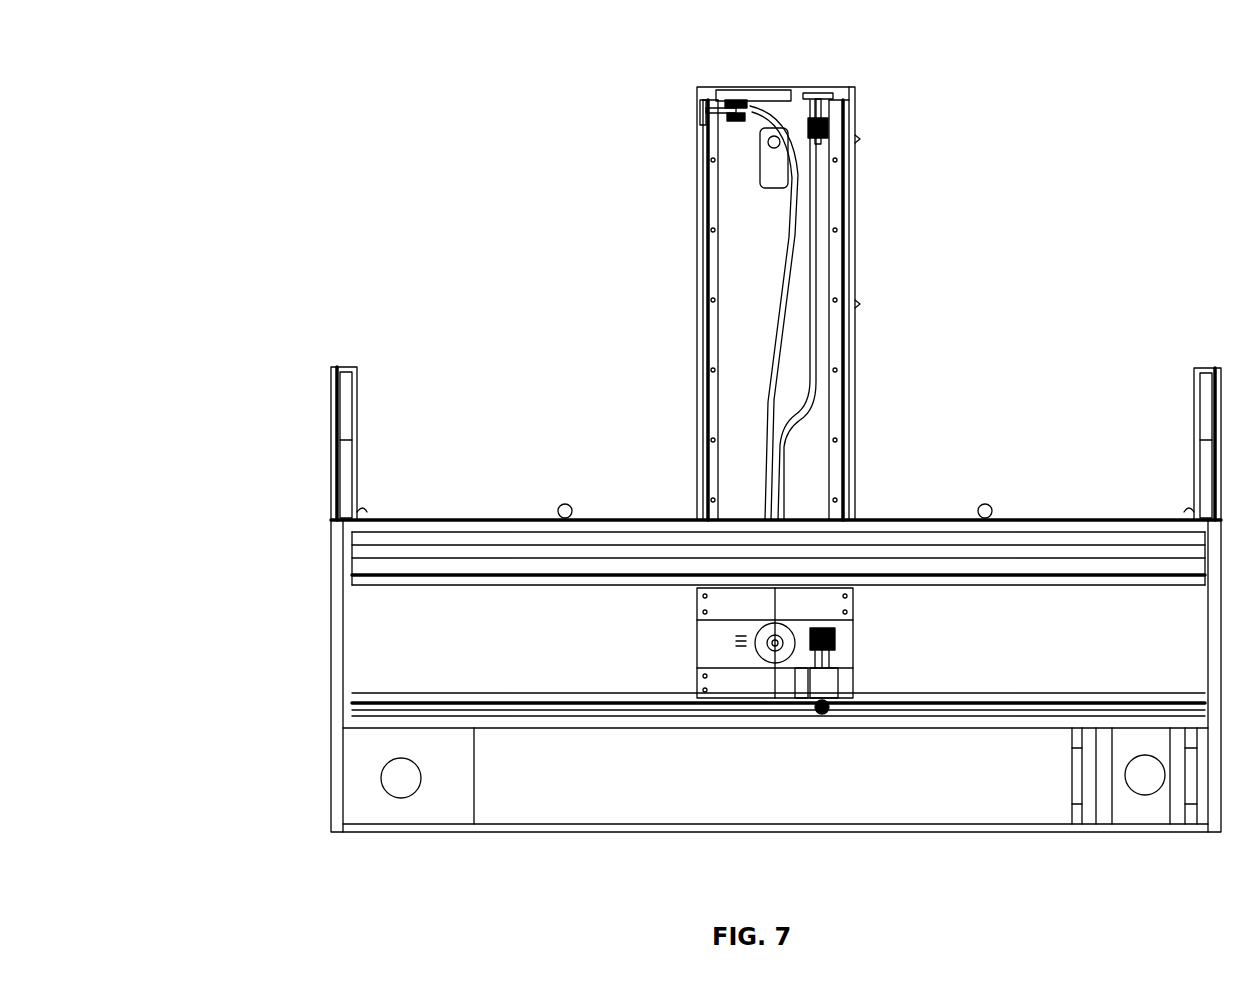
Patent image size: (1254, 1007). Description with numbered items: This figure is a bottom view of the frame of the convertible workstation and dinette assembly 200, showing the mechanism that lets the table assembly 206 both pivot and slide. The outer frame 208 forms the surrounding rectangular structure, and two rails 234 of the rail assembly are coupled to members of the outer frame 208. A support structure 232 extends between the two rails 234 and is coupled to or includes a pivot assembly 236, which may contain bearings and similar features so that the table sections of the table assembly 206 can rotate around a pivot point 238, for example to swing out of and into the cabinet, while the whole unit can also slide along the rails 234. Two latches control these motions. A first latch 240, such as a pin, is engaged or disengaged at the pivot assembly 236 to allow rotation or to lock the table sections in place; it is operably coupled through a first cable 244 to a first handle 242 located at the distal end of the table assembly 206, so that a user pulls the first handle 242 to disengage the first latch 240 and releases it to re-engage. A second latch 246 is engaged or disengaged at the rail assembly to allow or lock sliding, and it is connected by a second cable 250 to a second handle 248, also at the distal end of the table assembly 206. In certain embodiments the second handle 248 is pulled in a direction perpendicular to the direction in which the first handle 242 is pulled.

The dinette assembly 200 is at (290, 118).
The table assembly 206 is at (912, 268).
The outer frame 208 is at (331, 668).
The support structure 232 is at (850, 605).
The rails 234 is at (448, 588).
The pivot assembly 236 is at (757, 646).
The pivot point 238 is at (775, 646).
The first latch 240 is at (775, 643).
The first handle 242 is at (700, 103).
The first cable 244 is at (780, 330).
The second latch 246 is at (826, 716).
The second handle 248 is at (822, 98).
The second cable 250 is at (802, 415).